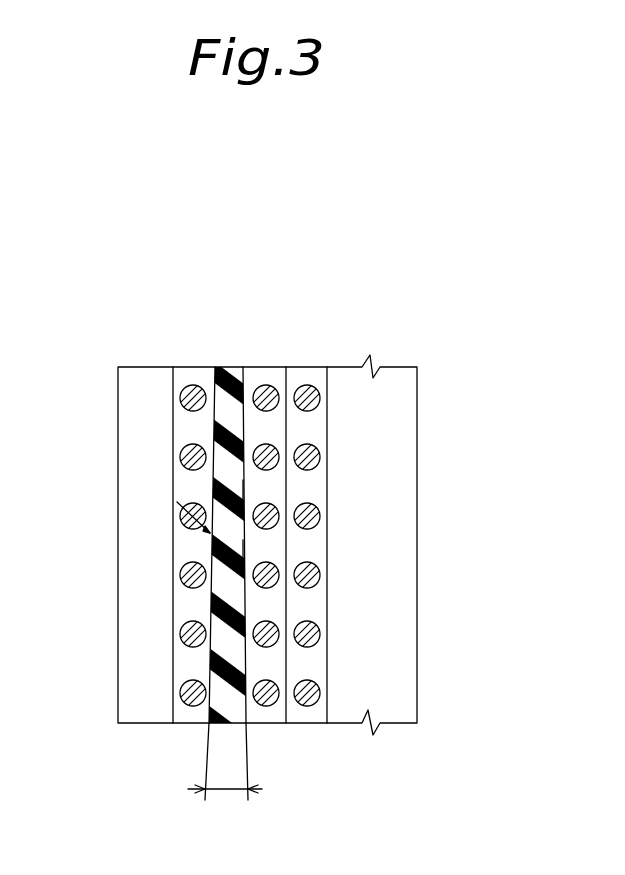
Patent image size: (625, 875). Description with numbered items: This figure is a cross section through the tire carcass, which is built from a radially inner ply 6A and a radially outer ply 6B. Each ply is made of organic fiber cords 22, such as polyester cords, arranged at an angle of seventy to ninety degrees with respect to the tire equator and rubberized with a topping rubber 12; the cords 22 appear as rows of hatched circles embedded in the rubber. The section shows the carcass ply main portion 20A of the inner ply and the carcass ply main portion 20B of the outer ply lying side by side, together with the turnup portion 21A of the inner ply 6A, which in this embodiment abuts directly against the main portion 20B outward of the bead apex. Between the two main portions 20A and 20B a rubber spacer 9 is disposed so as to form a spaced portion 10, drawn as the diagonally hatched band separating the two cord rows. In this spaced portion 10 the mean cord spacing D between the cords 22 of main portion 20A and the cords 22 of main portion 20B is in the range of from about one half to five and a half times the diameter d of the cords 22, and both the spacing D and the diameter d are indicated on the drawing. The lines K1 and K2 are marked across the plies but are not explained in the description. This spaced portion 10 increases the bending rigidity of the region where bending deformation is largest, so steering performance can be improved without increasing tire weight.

The radially inner ply 6A is at (193, 728).
The radially outer ply 6B is at (265, 732).
The rubber spacer 9 is at (221, 373).
The spaced portion 10 is at (247, 550).
The topping rubber 12 is at (183, 660).
The carcass ply main portion 20A is at (190, 380).
The carcass ply main portion 20B is at (262, 380).
The turnup portion 21A is at (312, 375).
The organic fiber cords 22 is at (178, 632).
The first boundary line K1 is at (287, 430).
The second boundary line K2 is at (248, 492).
The diameter of the carcass cords d is at (187, 530).
The mean cord spacing D is at (233, 790).